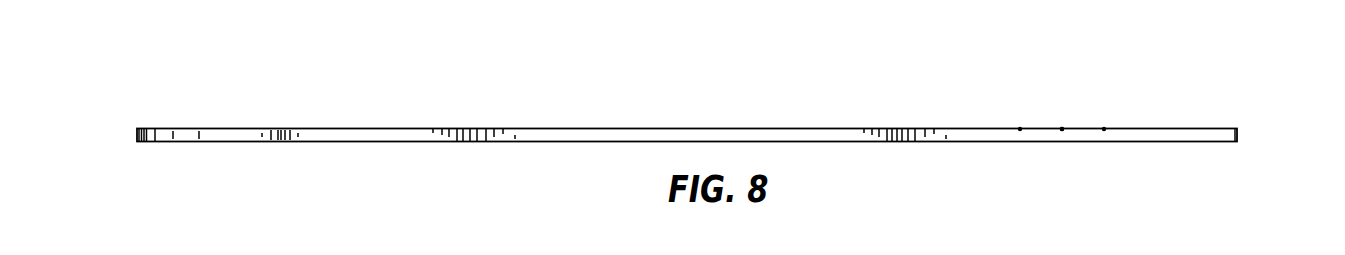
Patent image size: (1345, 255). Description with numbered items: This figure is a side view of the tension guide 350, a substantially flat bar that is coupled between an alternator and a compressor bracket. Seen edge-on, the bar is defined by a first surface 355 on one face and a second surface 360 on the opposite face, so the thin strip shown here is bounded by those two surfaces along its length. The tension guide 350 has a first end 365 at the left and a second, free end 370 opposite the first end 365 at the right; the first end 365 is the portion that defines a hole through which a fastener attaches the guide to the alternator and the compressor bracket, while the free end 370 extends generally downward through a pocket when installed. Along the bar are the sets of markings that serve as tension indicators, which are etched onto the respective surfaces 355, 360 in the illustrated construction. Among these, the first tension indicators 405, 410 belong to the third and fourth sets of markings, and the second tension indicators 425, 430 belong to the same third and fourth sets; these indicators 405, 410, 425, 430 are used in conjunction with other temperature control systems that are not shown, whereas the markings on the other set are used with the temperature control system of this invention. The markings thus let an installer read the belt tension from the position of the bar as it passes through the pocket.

The tension guide 350 is at (530, 88).
The first surface 355 is at (965, 142).
The second surface 360 is at (682, 128).
The first end 365 is at (137, 135).
The second, free end 370 is at (1237, 134).
The first tension indicator 405 is at (1104, 128).
The first tension indicator 410 is at (1062, 128).
The second tension indicator 425 is at (1062, 129).
The second tension indicator 430 is at (1020, 128).